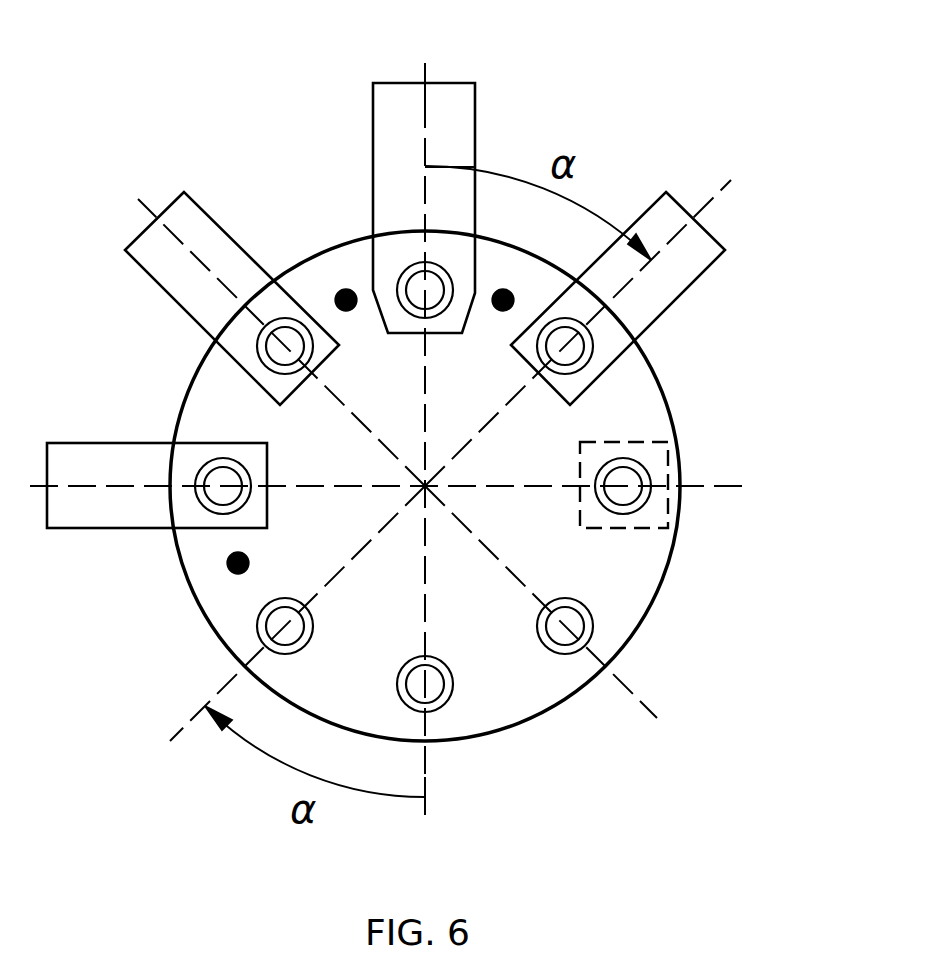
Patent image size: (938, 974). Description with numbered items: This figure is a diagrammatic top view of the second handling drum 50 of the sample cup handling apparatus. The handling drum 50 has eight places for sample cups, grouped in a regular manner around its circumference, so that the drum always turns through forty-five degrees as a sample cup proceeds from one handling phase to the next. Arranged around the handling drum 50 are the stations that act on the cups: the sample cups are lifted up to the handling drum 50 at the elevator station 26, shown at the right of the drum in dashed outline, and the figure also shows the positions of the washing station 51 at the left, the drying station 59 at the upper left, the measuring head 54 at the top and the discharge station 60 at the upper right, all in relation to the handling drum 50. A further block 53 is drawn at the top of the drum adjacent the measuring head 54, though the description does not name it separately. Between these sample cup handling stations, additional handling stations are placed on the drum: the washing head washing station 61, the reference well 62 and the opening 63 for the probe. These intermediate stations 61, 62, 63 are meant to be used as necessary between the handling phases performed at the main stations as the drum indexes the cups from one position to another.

The second handling drum 50 is at (643, 622).
The top block 53 is at (373, 150).
The measuring head 54 is at (413, 278).
The drying station 59 is at (272, 358).
The discharge station 60 is at (578, 357).
The elevator station 26 is at (647, 473).
The washing station 51 is at (210, 502).
The washing head washing station 61 is at (249, 558).
The reference well 62 is at (349, 312).
The opening for the probe 63 is at (500, 312).